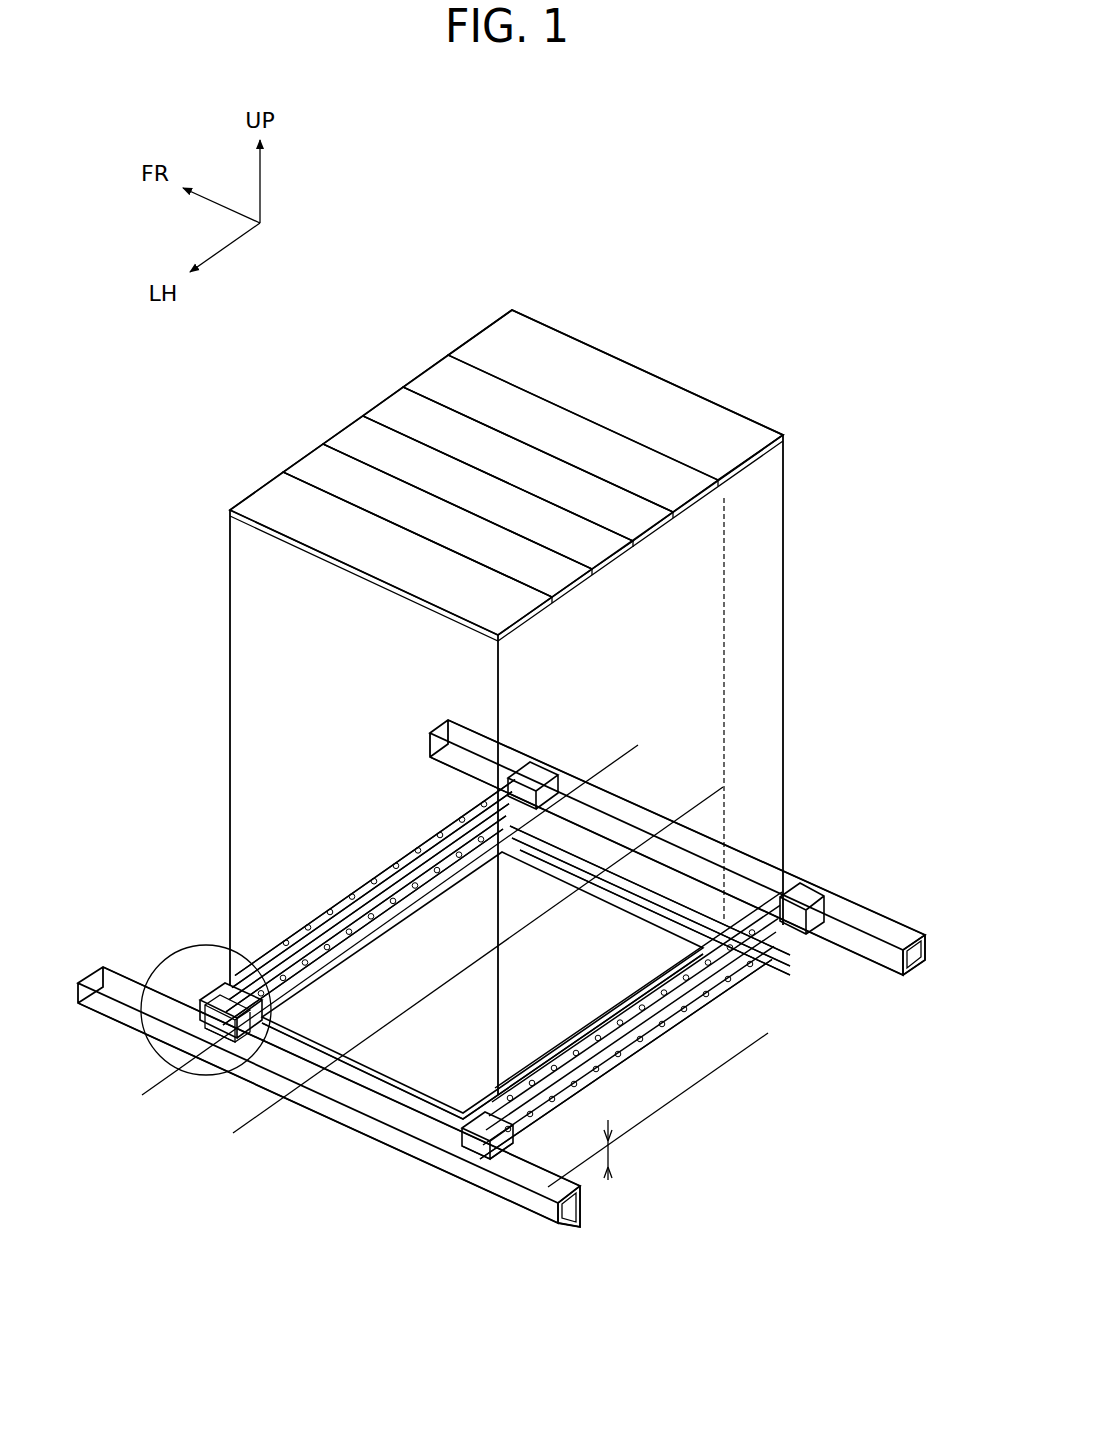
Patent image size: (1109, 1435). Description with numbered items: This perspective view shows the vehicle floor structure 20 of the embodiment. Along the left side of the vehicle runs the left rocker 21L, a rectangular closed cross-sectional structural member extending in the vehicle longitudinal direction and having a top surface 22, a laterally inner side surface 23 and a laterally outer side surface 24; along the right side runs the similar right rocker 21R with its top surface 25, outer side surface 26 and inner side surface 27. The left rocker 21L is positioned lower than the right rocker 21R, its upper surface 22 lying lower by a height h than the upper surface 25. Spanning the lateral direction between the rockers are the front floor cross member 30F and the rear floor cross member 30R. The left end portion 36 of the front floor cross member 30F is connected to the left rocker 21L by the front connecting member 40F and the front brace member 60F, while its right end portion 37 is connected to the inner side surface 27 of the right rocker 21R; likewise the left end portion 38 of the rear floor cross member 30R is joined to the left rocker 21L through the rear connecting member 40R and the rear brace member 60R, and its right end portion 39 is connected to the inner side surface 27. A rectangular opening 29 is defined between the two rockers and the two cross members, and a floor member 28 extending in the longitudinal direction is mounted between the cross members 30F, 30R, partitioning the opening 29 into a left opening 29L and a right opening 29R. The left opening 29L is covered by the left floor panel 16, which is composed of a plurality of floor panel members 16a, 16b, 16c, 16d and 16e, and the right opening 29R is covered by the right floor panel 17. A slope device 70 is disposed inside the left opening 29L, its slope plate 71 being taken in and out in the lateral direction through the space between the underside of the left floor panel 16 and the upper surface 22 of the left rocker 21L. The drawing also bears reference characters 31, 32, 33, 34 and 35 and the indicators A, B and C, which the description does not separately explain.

The left floor panel 16 is at (133, 438).
The floor panel member 16a is at (253, 490).
The floor panel member 16b is at (300, 457).
The floor panel member 16c is at (338, 425).
The floor panel member 16d is at (378, 388).
The floor panel member 16e is at (420, 372).
The right floor panel 17 is at (487, 327).
The vehicle floor structure 20 is at (185, 663).
The left rocker 21L is at (560, 1232).
The right rocker 21R is at (850, 893).
The top surface 22 is at (485, 1185).
The inner side surface 23 is at (583, 1210).
The outer side surface 24 is at (508, 1218).
The top surface 25 is at (890, 920).
The outer side surface 26 is at (893, 958).
The inner side surface 27 is at (885, 975).
The floor member 28 is at (768, 924).
The rectangular opening 29 is at (800, 1138).
The left opening 29L is at (770, 962).
The right opening 29R is at (806, 937).
The front floor cross member 30F is at (385, 860).
The rear floor cross member 30R is at (627, 1050).
The rail upper wall 31 is at (325, 925).
The rail side wall 32 is at (312, 928).
The rail lower flange 33 is at (250, 948).
The rail upper flange 34 is at (445, 860).
The rail lower wall 35 is at (342, 898).
The left end portion 36 is at (230, 975).
The right end portion 37 is at (524, 790).
The left end portion 38 is at (548, 1117).
The right end portion 39 is at (797, 914).
The front connecting member 40F is at (198, 1027).
The rear connecting member 40R is at (465, 1150).
The front brace member 60F is at (228, 1050).
The rear brace member 60R is at (528, 1140).
The slope device 70 is at (398, 1160).
The slope plate 71 is at (365, 1098).
The height h is at (615, 1152).
The section line A- A is at (163, 1094).
The section line B- B is at (257, 1137).
The detail region C is at (170, 945).